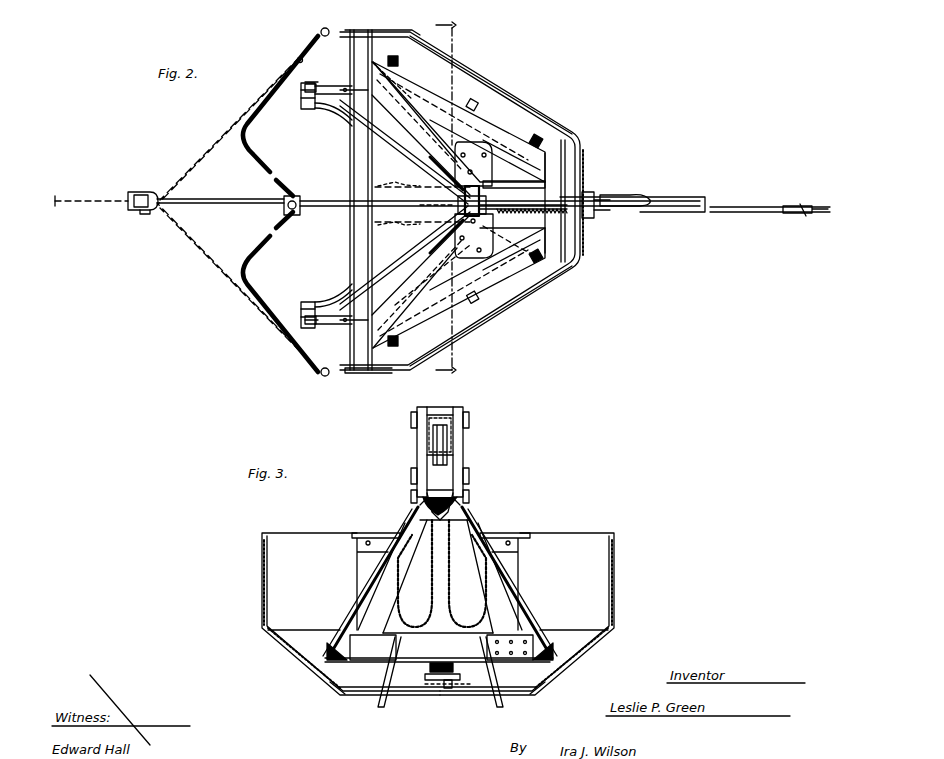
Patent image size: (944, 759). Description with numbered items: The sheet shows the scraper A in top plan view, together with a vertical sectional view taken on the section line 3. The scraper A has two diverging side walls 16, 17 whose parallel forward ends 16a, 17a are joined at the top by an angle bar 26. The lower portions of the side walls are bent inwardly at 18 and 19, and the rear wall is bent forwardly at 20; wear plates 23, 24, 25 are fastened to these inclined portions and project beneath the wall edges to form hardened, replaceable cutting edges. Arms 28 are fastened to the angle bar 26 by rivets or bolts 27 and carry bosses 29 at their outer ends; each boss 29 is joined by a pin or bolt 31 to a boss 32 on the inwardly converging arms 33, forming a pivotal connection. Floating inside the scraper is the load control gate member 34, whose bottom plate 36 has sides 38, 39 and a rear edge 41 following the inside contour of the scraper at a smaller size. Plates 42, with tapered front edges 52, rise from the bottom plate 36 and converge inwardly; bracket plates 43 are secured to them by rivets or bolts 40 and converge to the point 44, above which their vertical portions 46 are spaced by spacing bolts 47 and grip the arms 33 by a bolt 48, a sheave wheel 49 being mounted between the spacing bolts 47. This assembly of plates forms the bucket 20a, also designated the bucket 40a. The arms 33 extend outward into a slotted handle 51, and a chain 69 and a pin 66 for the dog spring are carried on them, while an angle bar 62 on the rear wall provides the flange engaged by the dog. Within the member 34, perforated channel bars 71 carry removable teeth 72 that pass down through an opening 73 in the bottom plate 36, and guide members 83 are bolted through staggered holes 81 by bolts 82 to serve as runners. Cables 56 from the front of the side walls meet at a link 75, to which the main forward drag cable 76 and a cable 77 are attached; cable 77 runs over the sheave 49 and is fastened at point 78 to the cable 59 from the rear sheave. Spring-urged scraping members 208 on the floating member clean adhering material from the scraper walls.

In FIG. 2, the scraper A is at (461, 201).
In FIG. 2, the section line 3— 3 is at (448, 198).
In FIG. 2, the side wall 16 is at (542, 118).
In FIG. 3, the side wall 16 is at (268, 578).
In FIG. 2, the parallel forward end of side wall 16a is at (380, 28).
In FIG. 2, the side wall 17 is at (485, 318).
In FIG. 3, the side wall 17 is at (608, 578).
In FIG. 2, the parallel forward end of side wall 17a is at (392, 370).
In FIG. 2, the inwardly bent lower portion of side wall 18 is at (480, 84).
In FIG. 3, the inwardly bent lower portion of side wall 18 is at (310, 668).
In FIG. 2, the inwardly bent lower portion of side wall 19 is at (432, 296).
In FIG. 3, the inwardly bent lower portion of side wall 19 is at (578, 660).
In FIG. 2, the forwardly bent portion of rear wall 20 is at (556, 203).
In FIG. 3, the forwardly bent portion of rear wall 20 is at (458, 580).
In FIG. 3, the bucket 20a is at (455, 452).
In FIG. 3, the wear plate 23 is at (332, 686).
In FIG. 3, the wear plate 24 is at (560, 680).
In FIG. 3, the wear plate 25 is at (438, 690).
In FIG. 2, the angle bar 26 is at (349, 148).
In FIG. 2, the rivets or bolts 27 is at (372, 92).
In FIG. 2, the arms 28 is at (335, 322).
In FIG. 2, the boss 29 is at (298, 205).
In FIG. 2, the pin or bolt 31 is at (316, 305).
In FIG. 2, the boss 32 is at (310, 305).
In FIG. 2, the inwardly converging arms 33 is at (405, 152).
In FIG. 2, the load control gate member 34 is at (500, 132).
In FIG. 3, the bottom plate 36 is at (440, 656).
In FIG. 2, the side of bottom plate 38 is at (440, 72).
In FIG. 2, the side of bottom plate 39 is at (500, 278).
In FIG. 2, the rivets or bolts 40 is at (456, 243).
In FIG. 3, the rivets or bolts 40 is at (505, 570).
In FIG. 2, the bucket 40a is at (485, 236).
In FIG. 2, the rear edge of bottom plate 41 is at (572, 168).
In FIG. 3, the plate 42 is at (525, 605).
In FIG. 3, the bracket plate 43 is at (480, 528).
In FIG. 3, the point 44 is at (462, 503).
In FIG. 2, the vertical portions 46 is at (514, 179).
In FIG. 3, the vertical portions 46 is at (415, 452).
In FIG. 2, the spacing bolts 47 is at (458, 182).
In FIG. 3, the spacing bolts 47 is at (446, 407).
In FIG. 3, the bolt 48 is at (415, 496).
In FIG. 2, the sheave wheel 49 is at (437, 212).
In FIG. 3, the sheave wheel 49 is at (455, 455).
In FIG. 2, the slotted handle 51 is at (648, 196).
In FIG. 2, the tapered front edges 52 is at (438, 158).
In FIG. 2, the cable 56 is at (256, 248).
In FIG. 2, the cable 59 is at (700, 200).
In FIG. 3, the angle bar 62 is at (525, 530).
In FIG. 2, the pin 66 is at (523, 218).
In FIG. 2, the chain 69 is at (586, 178).
In FIG. 3, the chain 69 is at (430, 582).
In FIG. 2, the channel bars 71 is at (462, 155).
In FIG. 3, the channel bars 71 is at (350, 647).
In FIG. 2, the teeth 72 is at (425, 302).
In FIG. 3, the teeth 72 is at (428, 666).
In FIG. 2, the opening 73 is at (428, 275).
In FIG. 3, the opening 73 is at (385, 660).
In FIG. 2, the link 75 is at (272, 208).
In FIG. 2, the main forward drag cable 76 is at (224, 198).
In FIG. 2, the cable 77 is at (740, 212).
In FIG. 2, the point 78 is at (800, 203).
In FIG. 2, the staggered holes 81 is at (352, 170).
In FIG. 2, the bolts 82 is at (350, 184).
In FIG. 3, the bolts 82 is at (450, 688).
In FIG. 2, the guide members 83 is at (335, 248).
In FIG. 3, the guide members 83 is at (470, 690).
In FIG. 2, the scraping members 208 is at (398, 338).
In FIG. 3, the scraping members 208 is at (566, 656).